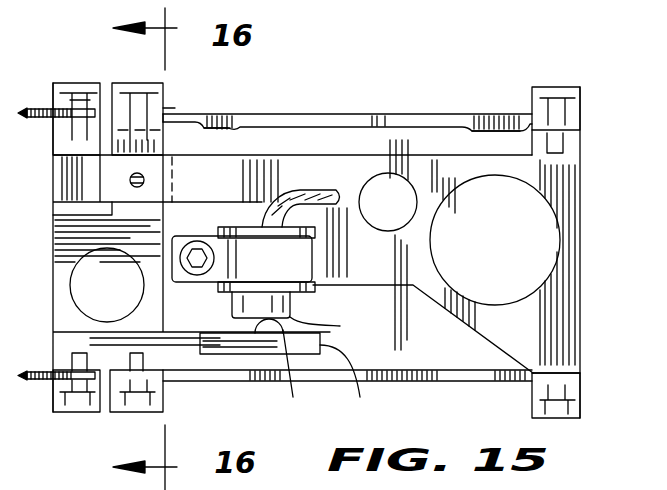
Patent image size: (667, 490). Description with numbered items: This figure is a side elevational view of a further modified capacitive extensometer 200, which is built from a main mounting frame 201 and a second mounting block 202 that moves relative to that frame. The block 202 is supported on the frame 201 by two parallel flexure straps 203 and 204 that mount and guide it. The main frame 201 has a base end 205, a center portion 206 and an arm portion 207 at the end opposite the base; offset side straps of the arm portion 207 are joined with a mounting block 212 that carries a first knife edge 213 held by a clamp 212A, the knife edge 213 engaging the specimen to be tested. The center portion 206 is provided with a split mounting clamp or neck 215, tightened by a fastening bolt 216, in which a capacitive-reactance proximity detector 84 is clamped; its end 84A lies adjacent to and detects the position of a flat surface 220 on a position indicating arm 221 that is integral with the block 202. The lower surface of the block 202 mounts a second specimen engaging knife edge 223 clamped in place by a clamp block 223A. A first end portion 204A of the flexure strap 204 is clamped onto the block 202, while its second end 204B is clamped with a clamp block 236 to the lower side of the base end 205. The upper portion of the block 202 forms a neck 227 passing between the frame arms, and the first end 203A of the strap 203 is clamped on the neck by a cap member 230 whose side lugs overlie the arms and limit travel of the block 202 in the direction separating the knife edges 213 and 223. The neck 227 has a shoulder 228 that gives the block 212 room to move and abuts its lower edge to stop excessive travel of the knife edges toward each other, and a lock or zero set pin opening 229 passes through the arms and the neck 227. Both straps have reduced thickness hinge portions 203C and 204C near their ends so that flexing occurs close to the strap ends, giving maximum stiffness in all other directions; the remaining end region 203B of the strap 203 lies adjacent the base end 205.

The extensometer 200 is at (549, 80).
The main mounting frame 201 is at (436, 214).
The second mounting block 202 is at (70, 333).
The flexure strap 203 is at (390, 114).
The first end of flexure strap 203A is at (172, 111).
The right end wall 203B is at (582, 123).
The reduced thickness portions 203C is at (195, 140).
The flexure strap 204 is at (400, 370).
The first end portion of flexure strap 204A is at (150, 374).
The second end of flexure strap 204B is at (578, 382).
The reduced thickness portions 204C is at (218, 340).
The base end 205 is at (560, 303).
The center portion 206 is at (330, 182).
The arm portion 207 is at (85, 208).
The mounting block 212 is at (72, 182).
The clamp 212A is at (88, 83).
The first knife edge 213 is at (46, 108).
The mounting clamp 215 is at (292, 258).
The fastening bolt 216 is at (200, 258).
The flat surface 220 is at (297, 374).
The position indicating arm 221 is at (352, 382).
The second knife edge 223 is at (40, 384).
The clamp block 223A is at (88, 413).
The neck 227 is at (182, 156).
The shoulder 228 is at (77, 208).
The zero set pin opening 229 is at (137, 190).
The cap member 230 is at (168, 112).
The clamp block 236 is at (582, 107).
The proximity detector 84 is at (290, 302).
The end of proximity detector 84A is at (340, 326).